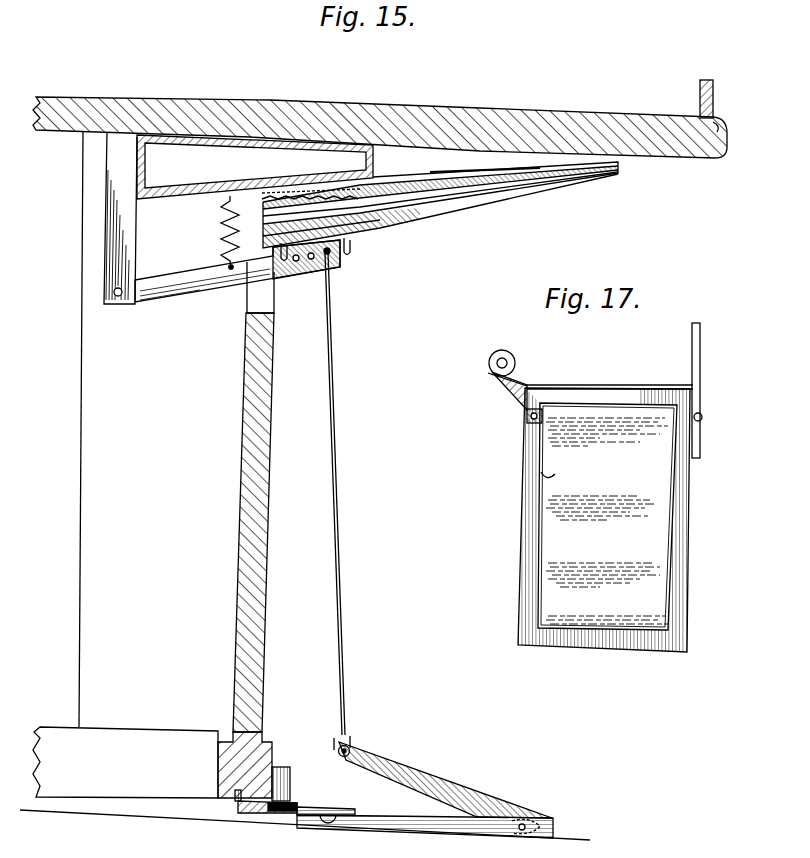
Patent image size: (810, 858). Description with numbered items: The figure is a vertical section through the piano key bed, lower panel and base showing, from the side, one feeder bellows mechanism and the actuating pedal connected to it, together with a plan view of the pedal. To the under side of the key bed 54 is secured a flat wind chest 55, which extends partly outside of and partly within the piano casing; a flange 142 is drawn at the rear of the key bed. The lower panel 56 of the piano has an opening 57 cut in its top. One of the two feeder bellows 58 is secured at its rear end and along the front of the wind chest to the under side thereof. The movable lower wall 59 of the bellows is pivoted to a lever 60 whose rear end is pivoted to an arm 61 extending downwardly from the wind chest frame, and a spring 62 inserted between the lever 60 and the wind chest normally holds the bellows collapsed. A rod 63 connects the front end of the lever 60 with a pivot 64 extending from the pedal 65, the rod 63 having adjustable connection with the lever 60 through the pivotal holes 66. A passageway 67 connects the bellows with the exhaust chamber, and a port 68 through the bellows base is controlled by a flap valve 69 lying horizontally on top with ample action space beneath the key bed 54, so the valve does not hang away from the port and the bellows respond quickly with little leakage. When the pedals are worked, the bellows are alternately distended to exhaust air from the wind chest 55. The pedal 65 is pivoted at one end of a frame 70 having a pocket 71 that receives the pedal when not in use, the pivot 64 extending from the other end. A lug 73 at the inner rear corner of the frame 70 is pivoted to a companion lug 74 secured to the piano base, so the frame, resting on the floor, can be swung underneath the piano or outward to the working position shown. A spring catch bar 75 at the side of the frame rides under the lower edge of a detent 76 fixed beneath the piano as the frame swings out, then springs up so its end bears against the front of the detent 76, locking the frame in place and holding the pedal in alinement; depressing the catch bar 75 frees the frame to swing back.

In FIG. 15, the key bed 54 is at (97, 103).
In FIG. 15, the rear flange 142 is at (713, 94).
In FIG. 15, the wind chest 55 is at (137, 176).
In FIG. 15, the lower panel 56 is at (248, 413).
In FIG. 15, the opening 57 is at (262, 302).
In FIG. 15, the feeder bellows 58 is at (470, 192).
In FIG. 15, the movable lower wall 59 is at (392, 210).
In FIG. 15, the lever 60 is at (163, 297).
In FIG. 15, the arm 61 is at (130, 242).
In FIG. 15, the spring 62 is at (214, 232).
In FIG. 15, the rod 63 is at (337, 375).
In FIG. 15, the pivot 64 is at (350, 748).
In FIG. 17, the pivot 64 is at (527, 420).
In FIG. 15, the pedal 65 is at (420, 770).
In FIG. 17, the pedal 65 is at (541, 478).
In FIG. 15, the pivotal holes 66 is at (318, 263).
In FIG. 15, the passageway 67 is at (310, 192).
In FIG. 15, the port 68 is at (505, 178).
In FIG. 15, the flap valve 69 is at (440, 170).
In FIG. 15, the frame 70 is at (362, 818).
In FIG. 17, the frame 70 is at (689, 512).
In FIG. 17, the pocket 71 is at (670, 597).
In FIG. 15, the lug 73 is at (294, 812).
In FIG. 17, the lug 73 is at (520, 370).
In FIG. 15, the companion lug 74 is at (284, 768).
In FIG. 15, the spring catch bar 75 is at (258, 814).
In FIG. 17, the spring catch bar 75 is at (701, 374).
In FIG. 15, the detent 76 is at (238, 800).